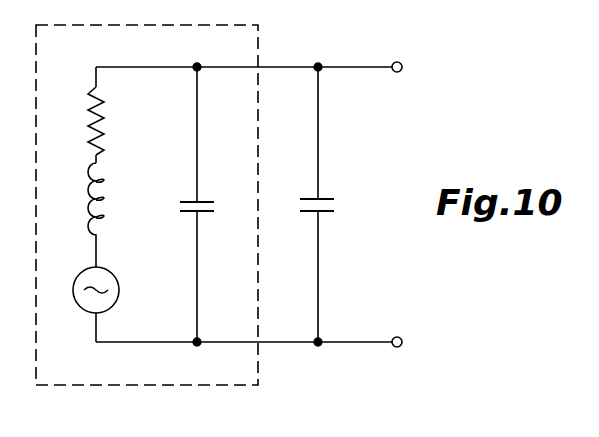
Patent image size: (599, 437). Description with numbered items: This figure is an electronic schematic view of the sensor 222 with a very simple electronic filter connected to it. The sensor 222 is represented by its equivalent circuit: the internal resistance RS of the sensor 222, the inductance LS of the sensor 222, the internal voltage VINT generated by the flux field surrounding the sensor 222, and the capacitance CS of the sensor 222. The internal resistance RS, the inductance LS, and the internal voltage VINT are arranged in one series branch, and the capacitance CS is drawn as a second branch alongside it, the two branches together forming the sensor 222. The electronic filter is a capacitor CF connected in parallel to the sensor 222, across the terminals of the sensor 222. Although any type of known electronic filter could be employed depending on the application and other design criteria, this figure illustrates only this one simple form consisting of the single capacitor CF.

The internal resistance RS is at (104, 114).
The inductance LS is at (101, 186).
The capacitance CS is at (238, 188).
The internal voltage VINT is at (108, 296).
The capacitor CF is at (333, 202).
The sensor 222 is at (137, 385).